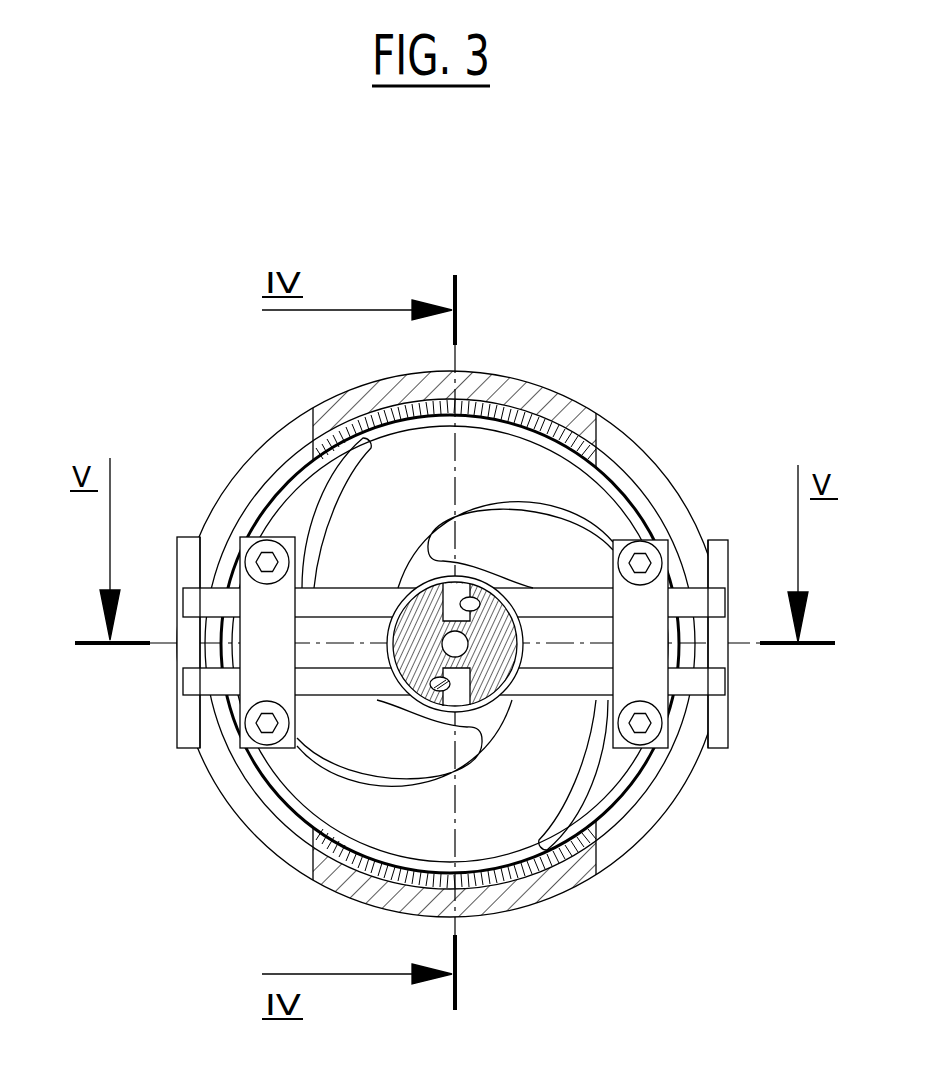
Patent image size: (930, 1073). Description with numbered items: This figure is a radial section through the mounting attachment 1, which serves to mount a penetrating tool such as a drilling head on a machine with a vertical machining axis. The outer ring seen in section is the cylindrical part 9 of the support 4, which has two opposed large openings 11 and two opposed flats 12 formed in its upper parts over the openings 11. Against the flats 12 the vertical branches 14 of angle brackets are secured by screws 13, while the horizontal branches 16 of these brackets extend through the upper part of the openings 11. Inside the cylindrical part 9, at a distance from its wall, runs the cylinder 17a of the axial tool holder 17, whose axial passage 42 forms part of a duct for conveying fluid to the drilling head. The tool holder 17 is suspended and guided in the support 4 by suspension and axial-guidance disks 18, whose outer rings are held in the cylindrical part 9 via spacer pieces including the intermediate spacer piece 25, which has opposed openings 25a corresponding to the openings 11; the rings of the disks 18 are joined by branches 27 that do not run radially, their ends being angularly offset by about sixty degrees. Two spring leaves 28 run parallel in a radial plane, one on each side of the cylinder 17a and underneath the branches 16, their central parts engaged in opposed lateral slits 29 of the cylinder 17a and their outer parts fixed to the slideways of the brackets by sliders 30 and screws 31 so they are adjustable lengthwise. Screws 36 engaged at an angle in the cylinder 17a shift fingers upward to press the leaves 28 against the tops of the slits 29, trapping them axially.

The attachment 1 is at (150, 800).
The support 4 is at (244, 450).
The cylindrical part 9 is at (482, 385).
The openings 11 is at (597, 432).
The flats 12 is at (707, 557).
The screws 13 is at (722, 730).
The vertical branches 14 is at (748, 706).
The horizontal branches 16 is at (583, 660).
The tool holder 17 is at (378, 668).
The cylinder 17a is at (403, 648).
The suspension and axial-guidance disks 18 is at (385, 440).
The intermediate spacer piece 25 is at (560, 855).
The opposed openings 25a is at (608, 468).
The branches 27 is at (513, 500).
The spring leaves 28 is at (560, 683).
The lateral slits 29 is at (460, 698).
The sliders 30 is at (263, 627).
The screws 31 is at (247, 557).
The screws 36 is at (440, 692).
The axial passage 42 is at (446, 640).